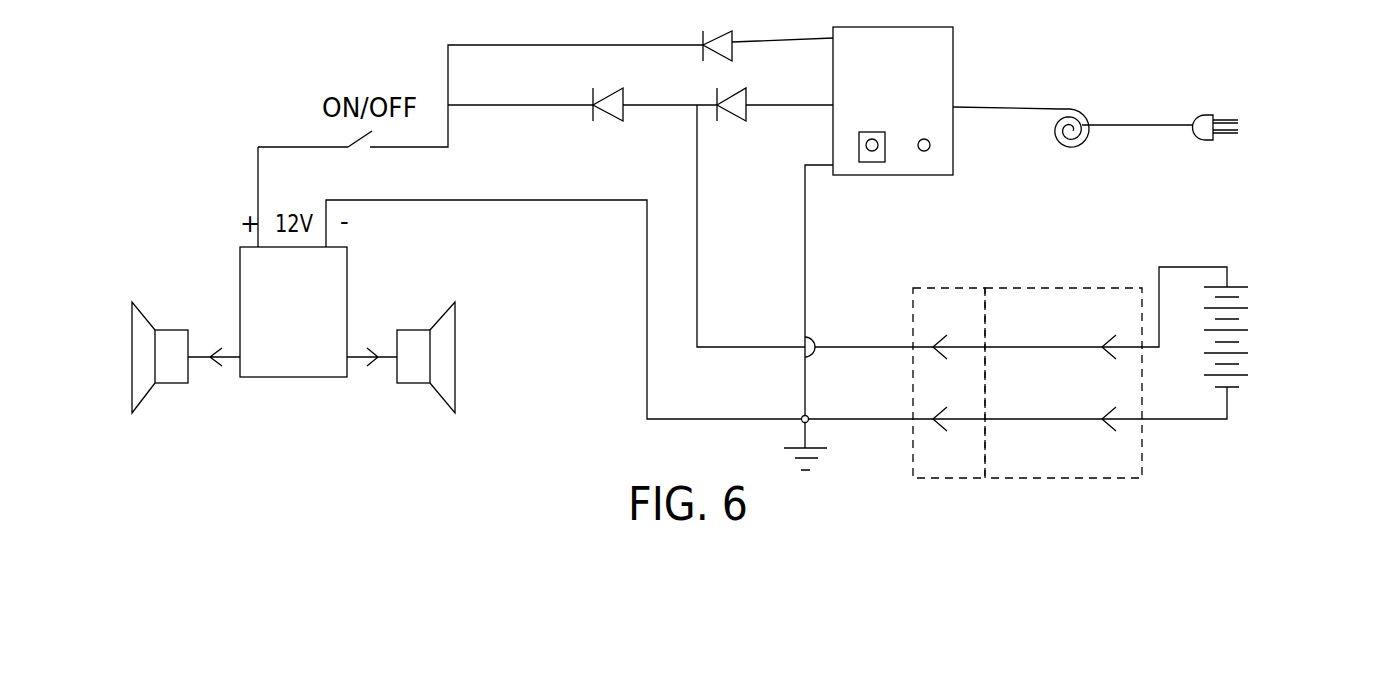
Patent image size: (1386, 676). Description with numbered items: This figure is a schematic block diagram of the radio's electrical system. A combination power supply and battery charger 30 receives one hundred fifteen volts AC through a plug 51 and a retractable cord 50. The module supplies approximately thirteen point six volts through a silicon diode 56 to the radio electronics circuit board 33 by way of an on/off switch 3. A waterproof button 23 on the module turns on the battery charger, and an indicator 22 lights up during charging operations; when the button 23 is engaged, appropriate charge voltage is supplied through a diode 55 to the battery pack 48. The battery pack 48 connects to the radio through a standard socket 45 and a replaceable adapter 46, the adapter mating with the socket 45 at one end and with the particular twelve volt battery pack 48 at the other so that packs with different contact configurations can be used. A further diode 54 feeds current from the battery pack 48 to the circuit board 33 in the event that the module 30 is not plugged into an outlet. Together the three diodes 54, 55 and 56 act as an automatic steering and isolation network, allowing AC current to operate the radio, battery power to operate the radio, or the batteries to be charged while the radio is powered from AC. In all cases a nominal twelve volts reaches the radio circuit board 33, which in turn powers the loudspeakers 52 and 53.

The on/off switch 3 is at (353, 150).
The indicator 22 is at (924, 152).
The waterproof button 23 is at (862, 162).
The combination power supply and battery charger 30 is at (953, 68).
The radio electronics circuit board 33 is at (302, 377).
The standard socket 45 is at (945, 288).
The replaceable adapter 46 is at (1043, 288).
The battery pack 48 is at (1228, 252).
The retractable cord 50 is at (1088, 112).
The plug 51 is at (1212, 115).
The loudspeaker 52 is at (413, 330).
The loudspeaker 53 is at (167, 337).
The diode 54 is at (610, 117).
The diode 55 is at (733, 117).
The silicon diode 56 is at (732, 50).